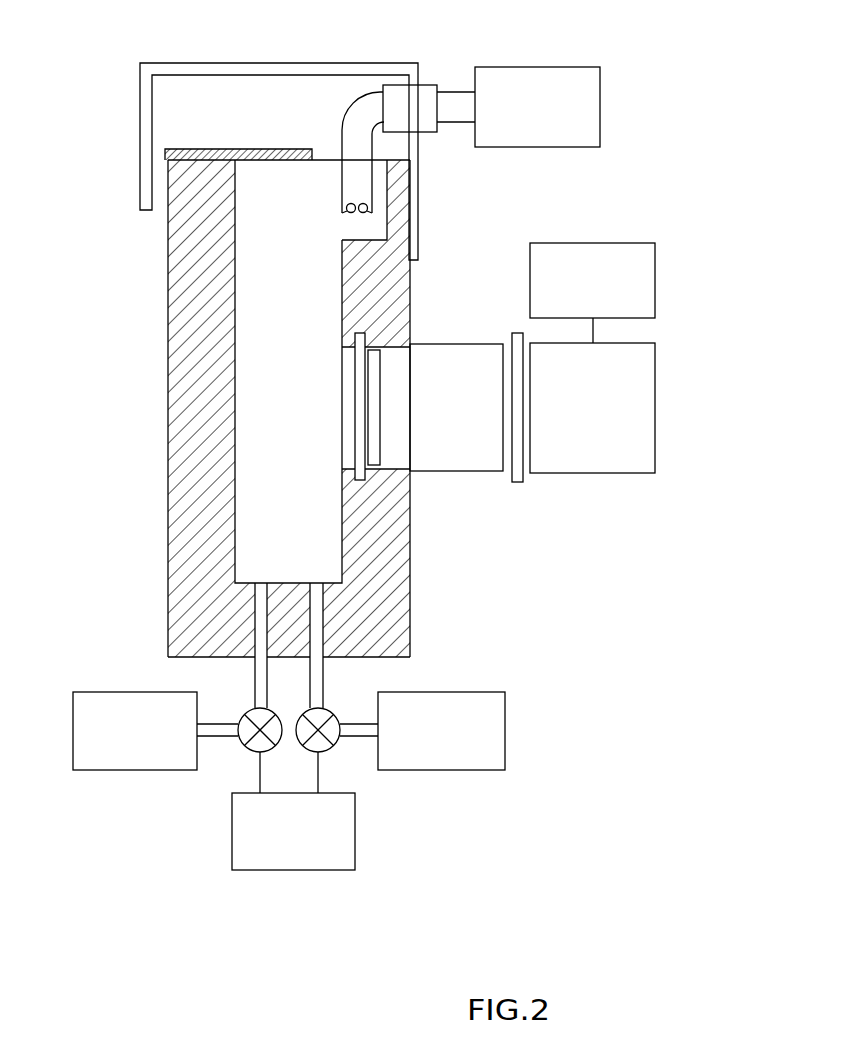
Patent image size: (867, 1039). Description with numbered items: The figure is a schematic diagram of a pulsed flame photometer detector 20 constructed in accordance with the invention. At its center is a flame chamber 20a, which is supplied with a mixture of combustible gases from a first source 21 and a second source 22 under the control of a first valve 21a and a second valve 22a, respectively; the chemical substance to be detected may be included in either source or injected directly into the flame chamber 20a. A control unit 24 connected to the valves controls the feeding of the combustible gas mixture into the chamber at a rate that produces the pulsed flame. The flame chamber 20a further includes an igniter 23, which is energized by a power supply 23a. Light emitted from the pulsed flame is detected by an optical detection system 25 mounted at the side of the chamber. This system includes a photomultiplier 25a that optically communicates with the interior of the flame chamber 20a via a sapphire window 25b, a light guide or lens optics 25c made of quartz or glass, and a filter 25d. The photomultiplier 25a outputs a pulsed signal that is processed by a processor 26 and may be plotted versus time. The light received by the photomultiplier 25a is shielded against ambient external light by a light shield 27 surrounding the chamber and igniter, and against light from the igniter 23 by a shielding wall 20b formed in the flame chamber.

The pulsed flame photometer detector 20 is at (254, 403).
The flame chamber 20a is at (326, 437).
The shielding wall 20b is at (364, 231).
The source 21 is at (156, 748).
The valve 21a is at (242, 752).
The source 22 is at (464, 748).
The valve 22a is at (338, 752).
The igniter 23 is at (341, 213).
The power supply 23a is at (578, 124).
The control unit 24 is at (325, 845).
The optical detection system 25 is at (498, 414).
The photomultiplier 25a is at (630, 428).
The sapphire window 25b is at (369, 479).
The light guide or lens optics 25c is at (490, 427).
The filter 25d is at (625, 526).
The processor 26 is at (625, 300).
The light shield 27 is at (389, 59).